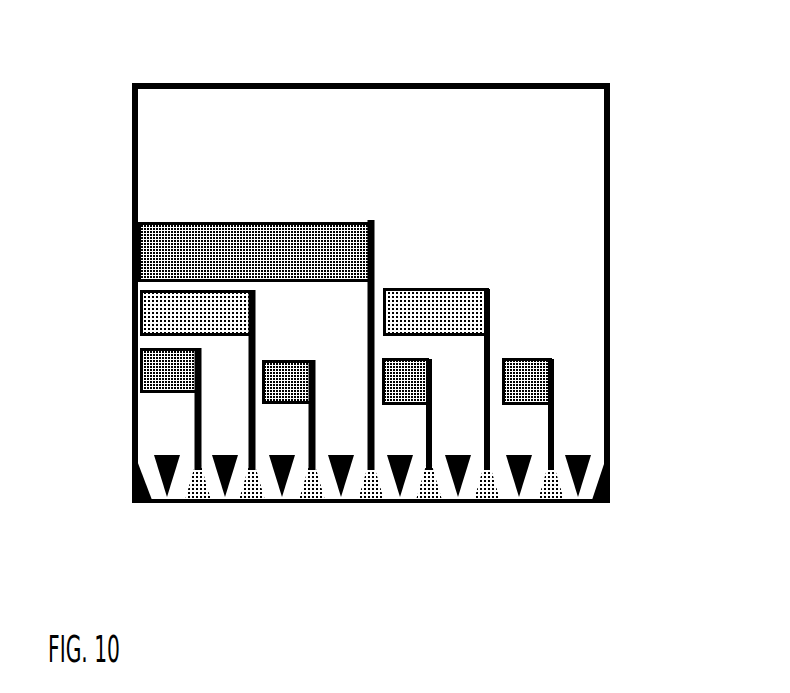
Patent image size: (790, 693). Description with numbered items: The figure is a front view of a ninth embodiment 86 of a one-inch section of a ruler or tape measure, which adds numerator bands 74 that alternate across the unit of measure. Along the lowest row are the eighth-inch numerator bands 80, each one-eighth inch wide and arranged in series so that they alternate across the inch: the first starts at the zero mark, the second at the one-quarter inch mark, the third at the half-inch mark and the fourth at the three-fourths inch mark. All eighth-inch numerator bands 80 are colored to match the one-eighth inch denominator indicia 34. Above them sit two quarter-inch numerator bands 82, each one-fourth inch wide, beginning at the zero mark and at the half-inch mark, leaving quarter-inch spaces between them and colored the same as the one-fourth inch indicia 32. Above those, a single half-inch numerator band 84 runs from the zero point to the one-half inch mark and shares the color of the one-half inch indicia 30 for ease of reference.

The one-half inch indicia 30 is at (377, 500).
The one-fourth inch indicia 32 is at (250, 500).
The one-eighth inch denominator indicia 34 is at (205, 500).
The numerator bands 74 is at (163, 252).
The eighth-inch numerator band 80 is at (150, 365).
The quarter-inch numerator band 82 is at (163, 317).
The half-inch numerator band 84 is at (280, 247).
The ninth embodiment 86 is at (652, 323).